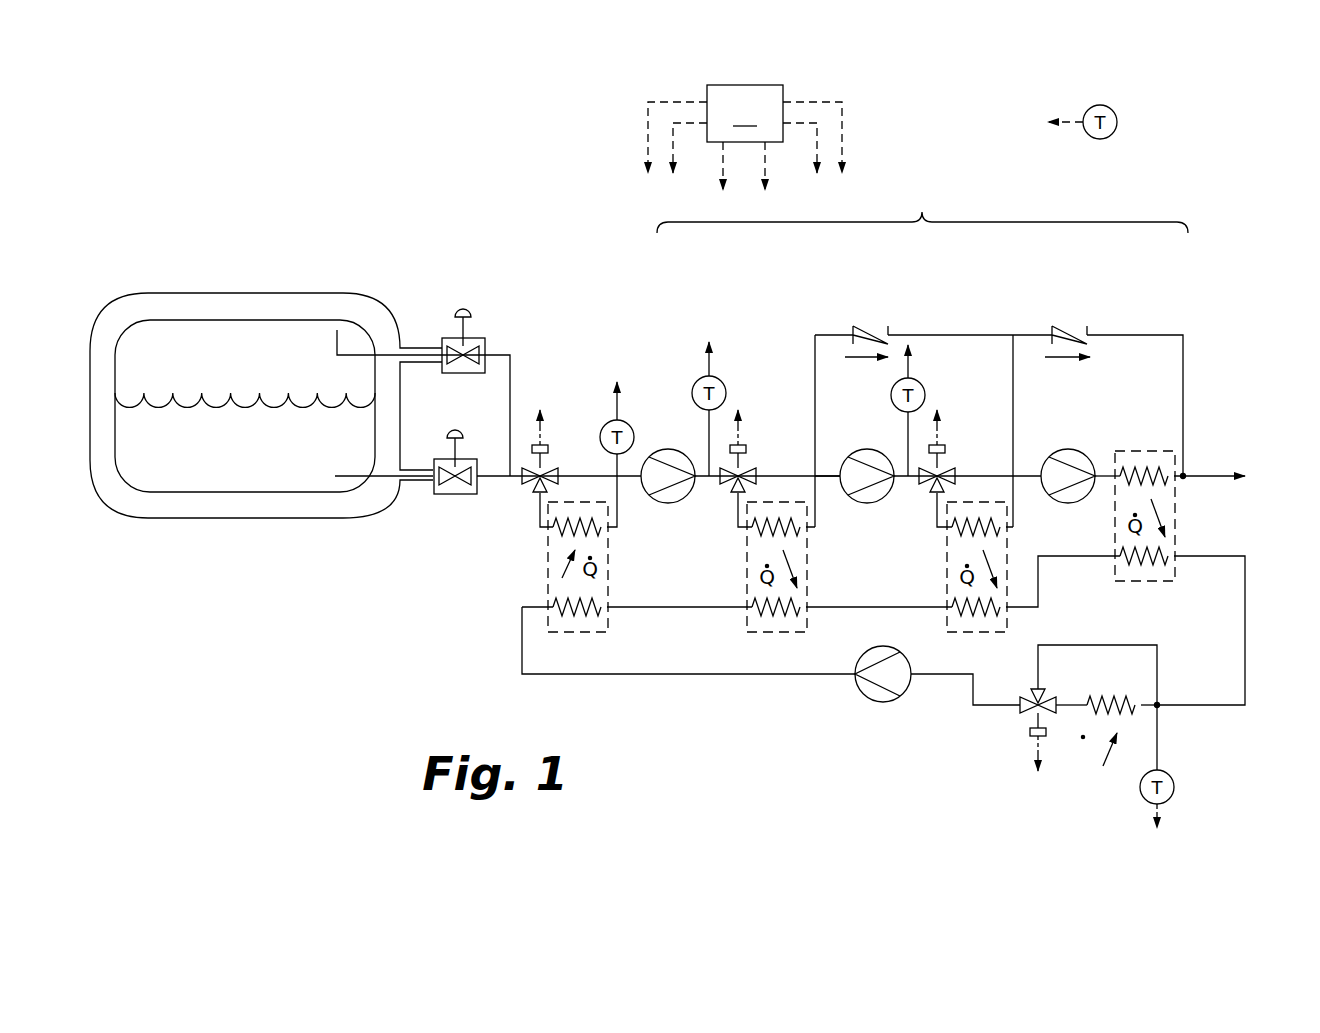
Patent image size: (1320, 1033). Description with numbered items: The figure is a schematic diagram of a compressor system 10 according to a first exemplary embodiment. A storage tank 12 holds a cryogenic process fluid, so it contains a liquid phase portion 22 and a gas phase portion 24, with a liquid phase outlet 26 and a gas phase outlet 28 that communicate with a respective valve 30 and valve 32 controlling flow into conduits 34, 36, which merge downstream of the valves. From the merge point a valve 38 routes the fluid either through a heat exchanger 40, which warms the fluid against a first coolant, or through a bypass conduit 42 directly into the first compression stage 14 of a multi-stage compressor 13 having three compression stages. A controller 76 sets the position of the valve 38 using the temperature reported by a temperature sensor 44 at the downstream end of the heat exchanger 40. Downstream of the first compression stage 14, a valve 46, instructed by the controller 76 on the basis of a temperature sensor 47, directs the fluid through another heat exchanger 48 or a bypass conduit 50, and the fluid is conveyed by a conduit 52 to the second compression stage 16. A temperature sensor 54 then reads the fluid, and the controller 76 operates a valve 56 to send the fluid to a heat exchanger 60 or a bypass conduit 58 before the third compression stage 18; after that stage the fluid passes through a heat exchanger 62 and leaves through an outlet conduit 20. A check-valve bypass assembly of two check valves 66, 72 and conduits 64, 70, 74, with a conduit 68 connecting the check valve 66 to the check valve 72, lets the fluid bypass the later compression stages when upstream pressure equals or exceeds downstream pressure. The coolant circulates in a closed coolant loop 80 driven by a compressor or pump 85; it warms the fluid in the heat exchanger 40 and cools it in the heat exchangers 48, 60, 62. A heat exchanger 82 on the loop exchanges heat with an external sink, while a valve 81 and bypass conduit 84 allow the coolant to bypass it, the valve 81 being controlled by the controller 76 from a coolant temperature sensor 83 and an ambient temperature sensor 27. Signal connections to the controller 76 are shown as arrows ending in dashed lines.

The compressor system 10 is at (574, 240).
The storage tank 12 is at (157, 308).
The multi-stage compressor 13 is at (922, 206).
The first compression stage 14 is at (672, 447).
The second compression stage 16 is at (866, 449).
The third compression stage 18 is at (1067, 449).
The outlet conduit 20 is at (1197, 474).
The liquid phase portion 22 is at (200, 456).
The gas phase portion 24 is at (200, 370).
The liquid phase outlet 26 is at (417, 469).
The temperature sensor 27 is at (1100, 105).
The gas phase outlet 28 is at (420, 349).
The valve 30 is at (456, 434).
The valve 32 is at (463, 315).
The conduit 34 is at (508, 486).
The conduit 36 is at (512, 380).
The valve 38 is at (545, 430).
The heat exchanger 40 is at (547, 553).
The bypass conduit 42 is at (578, 474).
The temperature sensor 44 is at (612, 385).
The valve 46 is at (746, 428).
The temperature sensor 47 is at (700, 378).
The heat exchanger 48 is at (747, 552).
The bypass conduit 50 is at (777, 474).
The conduit 52 is at (827, 474).
The temperature sensor 54 is at (920, 381).
The valve 56 is at (945, 412).
The bypass conduit 58 is at (977, 474).
The heat exchanger 60 is at (947, 553).
The heat exchanger 62 is at (1115, 508).
The conduit 64 is at (815, 357).
The check valve 66 is at (868, 326).
The conduit 68 is at (940, 334).
The conduit 70 is at (1014, 360).
The check valve 72 is at (1073, 326).
The conduit 74 is at (1143, 334).
The controller 76 is at (745, 137).
The closed coolant loop 80 is at (495, 640).
The valve 81 is at (1028, 732).
The heat exchanger 82 is at (1132, 712).
The temperature sensor 83 is at (1174, 787).
The bypass conduit 84 is at (1088, 645).
The compressor or pump 85 is at (883, 703).